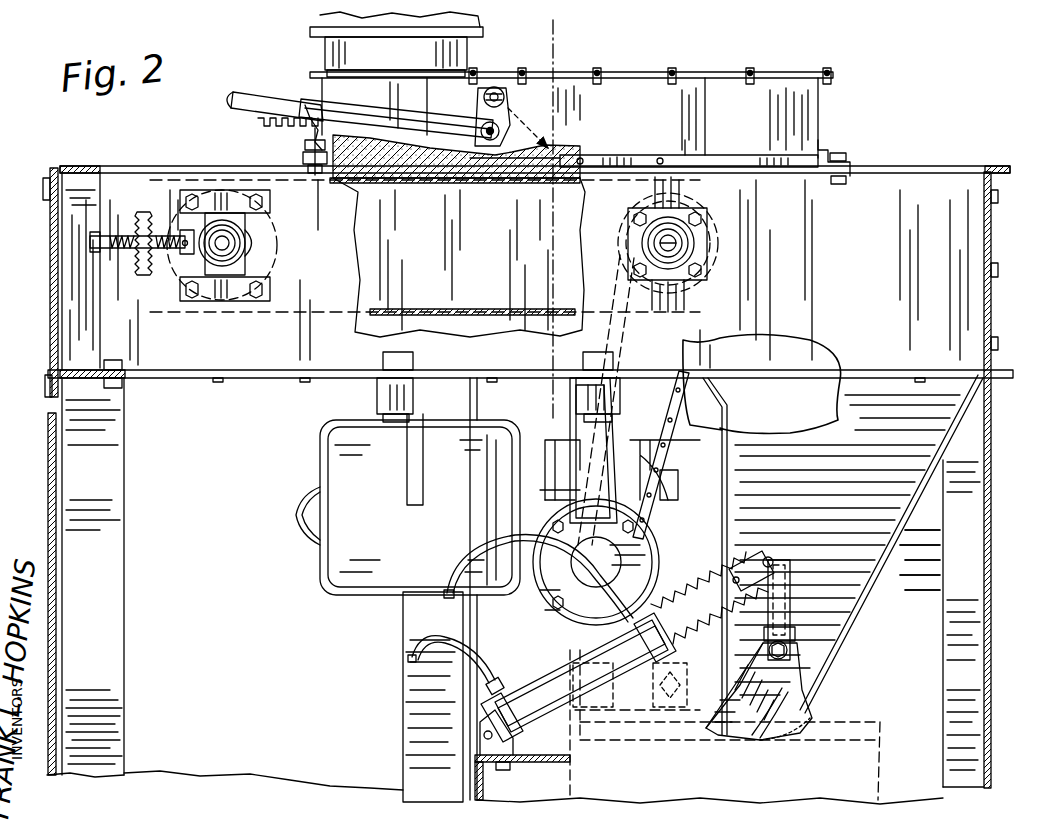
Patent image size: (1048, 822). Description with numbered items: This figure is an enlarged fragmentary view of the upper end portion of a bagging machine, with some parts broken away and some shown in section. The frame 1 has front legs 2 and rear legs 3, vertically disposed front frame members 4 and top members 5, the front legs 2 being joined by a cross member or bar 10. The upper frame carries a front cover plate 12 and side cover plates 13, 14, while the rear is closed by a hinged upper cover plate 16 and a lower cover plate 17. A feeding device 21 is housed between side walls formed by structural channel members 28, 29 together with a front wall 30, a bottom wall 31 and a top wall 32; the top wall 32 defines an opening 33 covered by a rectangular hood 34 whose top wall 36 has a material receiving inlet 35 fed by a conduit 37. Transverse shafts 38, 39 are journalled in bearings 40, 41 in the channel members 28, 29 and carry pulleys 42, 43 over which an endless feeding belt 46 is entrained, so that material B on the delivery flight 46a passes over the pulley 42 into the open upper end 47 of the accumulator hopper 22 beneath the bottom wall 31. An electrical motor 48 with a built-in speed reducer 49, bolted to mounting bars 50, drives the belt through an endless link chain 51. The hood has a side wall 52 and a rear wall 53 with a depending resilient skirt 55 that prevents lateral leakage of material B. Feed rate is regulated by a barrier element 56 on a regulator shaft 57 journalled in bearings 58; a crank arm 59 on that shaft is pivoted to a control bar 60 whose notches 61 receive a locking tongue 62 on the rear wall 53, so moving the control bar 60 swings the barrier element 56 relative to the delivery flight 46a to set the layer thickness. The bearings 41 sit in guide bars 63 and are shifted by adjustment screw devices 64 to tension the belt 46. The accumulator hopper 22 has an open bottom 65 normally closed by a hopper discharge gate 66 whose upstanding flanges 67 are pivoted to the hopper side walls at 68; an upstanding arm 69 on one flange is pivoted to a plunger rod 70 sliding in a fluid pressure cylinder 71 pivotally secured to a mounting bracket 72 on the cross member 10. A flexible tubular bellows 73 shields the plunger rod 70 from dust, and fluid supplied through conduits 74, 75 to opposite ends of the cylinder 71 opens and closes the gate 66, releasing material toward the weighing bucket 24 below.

The frame 1 is at (395, 722).
The front legs 2 is at (410, 763).
The rear legs 3 is at (108, 708).
The front frame members 4 is at (968, 505).
The top members 5 is at (522, 40).
The cross member 10 is at (555, 762).
The front cover plate 12 is at (990, 578).
The side cover plate 13 is at (912, 633).
The side cover plate 14 is at (228, 631).
The upper cover plate 16 is at (49, 283).
The lower cover plate 17 is at (49, 487).
The feeding device 21 is at (845, 147).
The accumulator hopper 22 is at (884, 557).
The weighing bucket 24 is at (878, 760).
The structural channel member 28 is at (425, 255).
The structural channel member 29 is at (272, 359).
The front wall 30 is at (993, 246).
The bottom wall 31 is at (180, 378).
The top wall 32 is at (893, 166).
The opening 33 is at (320, 183).
The hood 34 is at (710, 80).
The material receiving inlet 35 is at (345, 60).
The top wall 36 is at (640, 72).
The conduit 37 is at (318, 20).
The transverse shaft 38 is at (680, 240).
The transverse shaft 39 is at (250, 244).
The bearings 40 is at (655, 302).
The bearings 41 is at (192, 308).
The pulley 42 is at (600, 262).
The pulley 43 is at (276, 283).
The endless feeding belt 46 is at (420, 184).
The delivery flight 46a is at (490, 182).
The open upper end 47 is at (735, 392).
The electrical motor 48 is at (462, 481).
The speed reducer 49 is at (640, 540).
The mounting bars 50 is at (376, 388).
The endless link chain 51 is at (655, 412).
The side wall 52 is at (812, 112).
The rear wall 53 is at (304, 143).
The resilient skirt 55 is at (345, 180).
The barrier element 56 is at (548, 148).
The regulator shaft 57 is at (500, 87).
The bearings 58 is at (506, 80).
The crank arm 59 is at (478, 108).
The control bar 60 is at (383, 118).
The notches 61 is at (290, 110).
The locking tongue 62 is at (322, 122).
The guide bars 63 is at (208, 190).
The adjustment screw devices 64 is at (160, 276).
The open bottom 65 is at (752, 740).
The hopper discharge gate 66 is at (784, 740).
The upstanding flanges 67 is at (800, 708).
The pivot 68 is at (790, 652).
The upstanding arm 69 is at (793, 605).
The plunger rod 70 is at (770, 556).
The fluid pressure cylinder 71 is at (560, 680).
The mounting bracket 72 is at (496, 762).
The flexible tubular bellows 73 is at (702, 598).
The conduit 74 is at (490, 666).
The conduit 75 is at (470, 552).
The material B is at (445, 178).